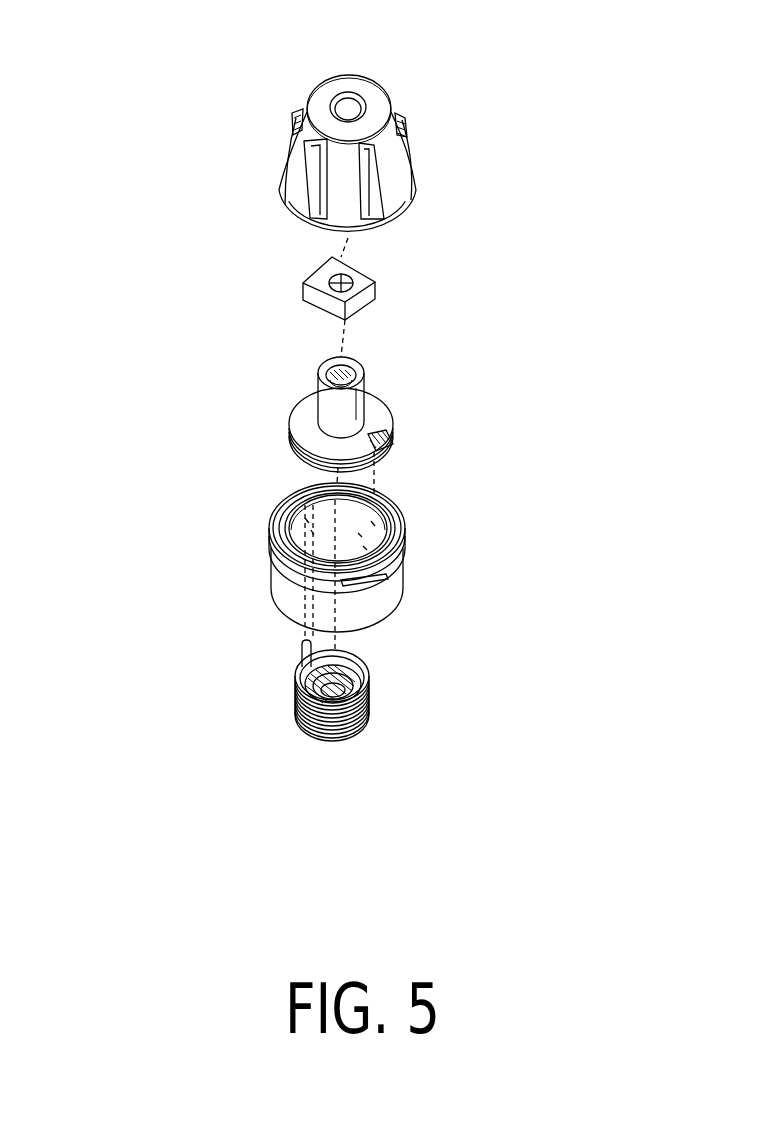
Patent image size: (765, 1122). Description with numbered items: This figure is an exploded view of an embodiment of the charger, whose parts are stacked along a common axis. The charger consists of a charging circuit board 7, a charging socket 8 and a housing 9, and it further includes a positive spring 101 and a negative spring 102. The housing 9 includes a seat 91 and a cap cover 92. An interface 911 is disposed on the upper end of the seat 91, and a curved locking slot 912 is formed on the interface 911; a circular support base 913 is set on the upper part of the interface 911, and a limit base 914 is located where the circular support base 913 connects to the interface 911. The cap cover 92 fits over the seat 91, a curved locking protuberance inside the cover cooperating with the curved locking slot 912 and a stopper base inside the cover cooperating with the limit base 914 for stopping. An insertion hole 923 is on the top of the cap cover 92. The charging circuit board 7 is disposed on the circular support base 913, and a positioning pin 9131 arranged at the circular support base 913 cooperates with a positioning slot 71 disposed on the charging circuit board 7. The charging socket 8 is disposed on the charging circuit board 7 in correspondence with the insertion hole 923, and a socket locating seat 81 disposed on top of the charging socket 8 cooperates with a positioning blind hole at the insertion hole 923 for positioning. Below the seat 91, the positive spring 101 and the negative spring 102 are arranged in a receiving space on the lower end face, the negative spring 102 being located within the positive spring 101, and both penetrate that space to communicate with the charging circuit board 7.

The housing 9 is at (304, 373).
The cap cover 92 is at (270, 122).
The insertion hole 923 is at (355, 103).
The socket locating seat 81 is at (292, 260).
The charging socket 8 is at (315, 368).
The charging circuit board 7 is at (287, 433).
The positioning slot 71 is at (392, 436).
The seat 91 is at (280, 583).
The interface 911 is at (403, 550).
The curved locking slot 912 is at (403, 580).
The circular support base 913 is at (280, 523).
The positioning pin 9131 is at (367, 535).
The limit base 914 is at (395, 525).
The positive spring 101 is at (293, 700).
The negative spring 102 is at (373, 682).